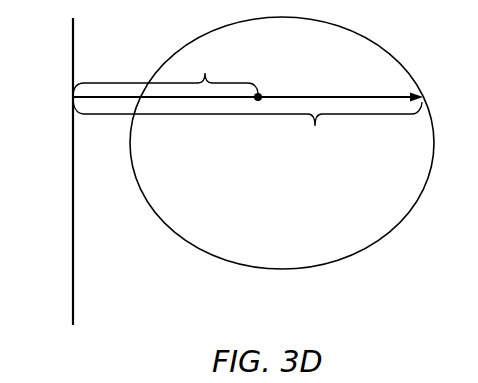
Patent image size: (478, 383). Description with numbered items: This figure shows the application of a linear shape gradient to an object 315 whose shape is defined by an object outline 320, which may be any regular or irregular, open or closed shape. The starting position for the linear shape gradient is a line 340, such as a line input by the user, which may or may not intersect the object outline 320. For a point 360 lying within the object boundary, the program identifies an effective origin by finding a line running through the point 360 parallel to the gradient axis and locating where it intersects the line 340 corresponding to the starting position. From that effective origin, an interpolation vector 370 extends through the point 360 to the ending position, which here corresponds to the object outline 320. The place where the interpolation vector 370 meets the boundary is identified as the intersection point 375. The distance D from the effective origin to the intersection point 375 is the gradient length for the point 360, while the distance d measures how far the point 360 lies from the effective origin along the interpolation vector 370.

The object 315 is at (425, 283).
The object outline 320 is at (205, 250).
The line 340 is at (72, 248).
The point 360 is at (259, 92).
The interpolation vector 370 is at (221, 98).
The intersection point 375 is at (426, 96).